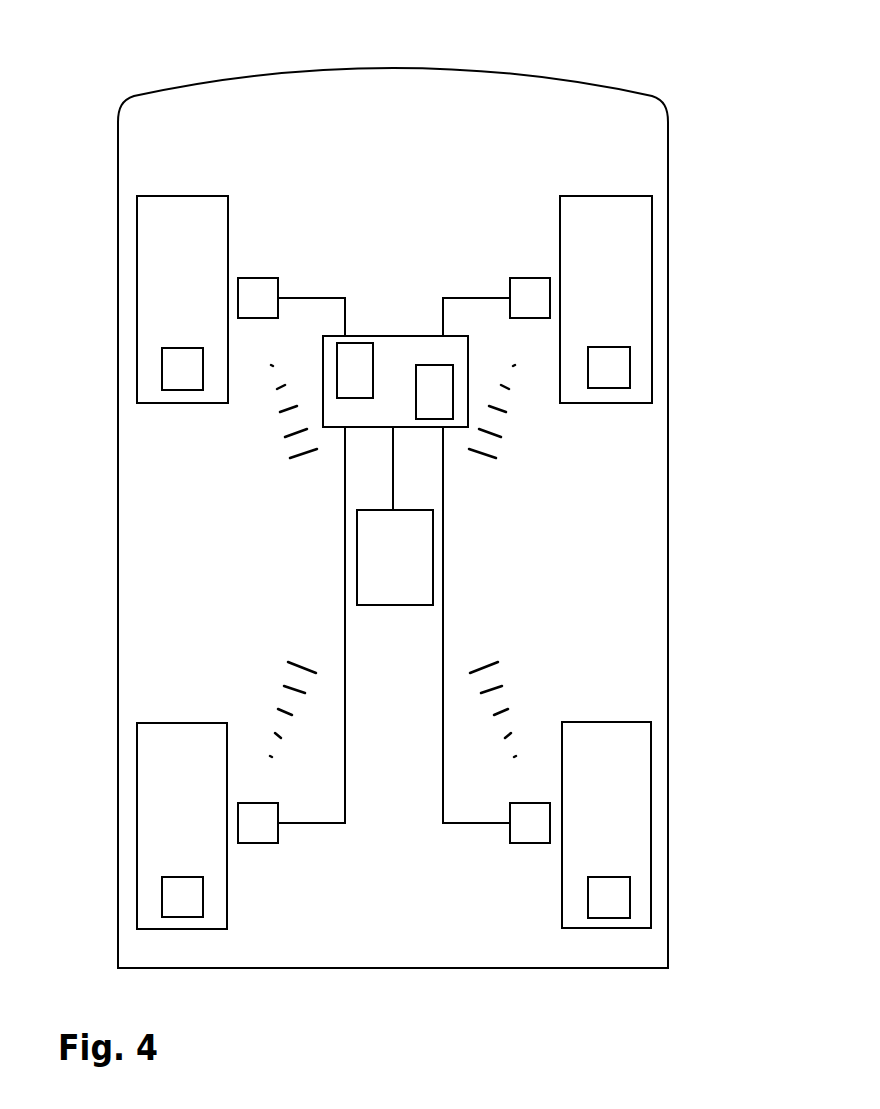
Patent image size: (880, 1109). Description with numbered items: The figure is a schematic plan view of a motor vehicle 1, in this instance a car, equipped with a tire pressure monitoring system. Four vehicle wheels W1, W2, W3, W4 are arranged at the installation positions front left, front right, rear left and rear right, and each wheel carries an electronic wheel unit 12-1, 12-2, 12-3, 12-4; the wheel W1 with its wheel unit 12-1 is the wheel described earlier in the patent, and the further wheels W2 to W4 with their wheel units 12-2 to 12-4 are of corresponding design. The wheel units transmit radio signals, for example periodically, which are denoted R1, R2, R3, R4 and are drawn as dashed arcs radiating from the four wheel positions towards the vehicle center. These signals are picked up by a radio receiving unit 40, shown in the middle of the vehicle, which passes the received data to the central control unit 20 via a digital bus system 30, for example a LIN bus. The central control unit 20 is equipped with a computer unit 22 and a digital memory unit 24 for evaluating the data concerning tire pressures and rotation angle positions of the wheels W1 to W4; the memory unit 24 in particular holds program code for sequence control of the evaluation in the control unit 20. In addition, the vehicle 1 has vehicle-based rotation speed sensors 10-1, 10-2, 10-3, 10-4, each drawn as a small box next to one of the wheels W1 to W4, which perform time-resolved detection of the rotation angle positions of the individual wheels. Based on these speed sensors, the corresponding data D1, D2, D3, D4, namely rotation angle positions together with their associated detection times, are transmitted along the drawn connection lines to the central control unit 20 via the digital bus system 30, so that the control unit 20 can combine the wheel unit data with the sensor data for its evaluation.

The motor vehicle 1 is at (88, 52).
The vehicle wheel W1 is at (157, 272).
The vehicle wheel W2 is at (630, 277).
The vehicle wheel W3 is at (163, 789).
The vehicle wheel W4 is at (635, 787).
The electronic wheel unit 12-1 is at (172, 363).
The electronic wheel unit 12-2 is at (622, 360).
The electronic wheel unit 12-3 is at (173, 893).
The electronic wheel unit 12-4 is at (620, 893).
The rotation speed sensor 10-1 is at (260, 293).
The rotation speed sensor 10-2 is at (528, 292).
The rotation speed sensor 10-3 is at (258, 832).
The rotation speed sensor 10-4 is at (528, 833).
The central control unit 20 is at (394, 350).
The computer unit 22 is at (369, 385).
The digital memory unit 24 is at (448, 407).
The digital bus system 30 is at (467, 568).
The radio receiving unit 40 is at (408, 570).
The data D1 is at (311, 304).
The data D2 is at (476, 304).
The data D3 is at (332, 625).
The data D4 is at (476, 625).
The radio signal R1 is at (318, 488).
The radio signal R2 is at (480, 462).
The radio signal R3 is at (315, 635).
The radio signal R4 is at (470, 635).